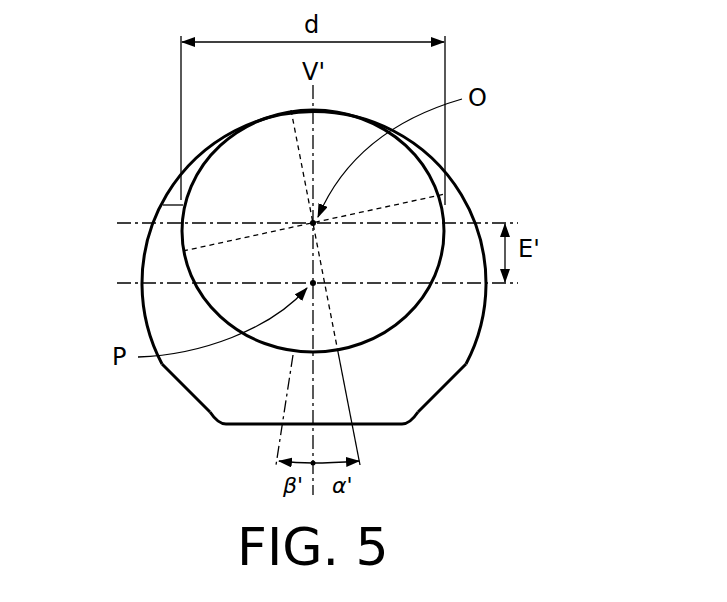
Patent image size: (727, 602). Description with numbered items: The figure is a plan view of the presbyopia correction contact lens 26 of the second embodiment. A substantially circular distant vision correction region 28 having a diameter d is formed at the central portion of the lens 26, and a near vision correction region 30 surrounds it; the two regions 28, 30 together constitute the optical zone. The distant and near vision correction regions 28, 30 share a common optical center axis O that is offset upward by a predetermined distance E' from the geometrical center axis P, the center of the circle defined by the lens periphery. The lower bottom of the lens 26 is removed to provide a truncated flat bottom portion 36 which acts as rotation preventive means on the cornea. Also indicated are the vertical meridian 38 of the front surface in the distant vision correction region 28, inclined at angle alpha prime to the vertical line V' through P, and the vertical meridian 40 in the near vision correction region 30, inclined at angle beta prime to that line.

The presbyopia correction contact lens 26 is at (477, 194).
The distant vision correction region 28 is at (181, 264).
The near vision correction region 30 is at (486, 325).
The truncated flat bottom portion 36 is at (387, 425).
The vertical meridian 38 is at (289, 154).
The vertical meridian 40 is at (281, 378).